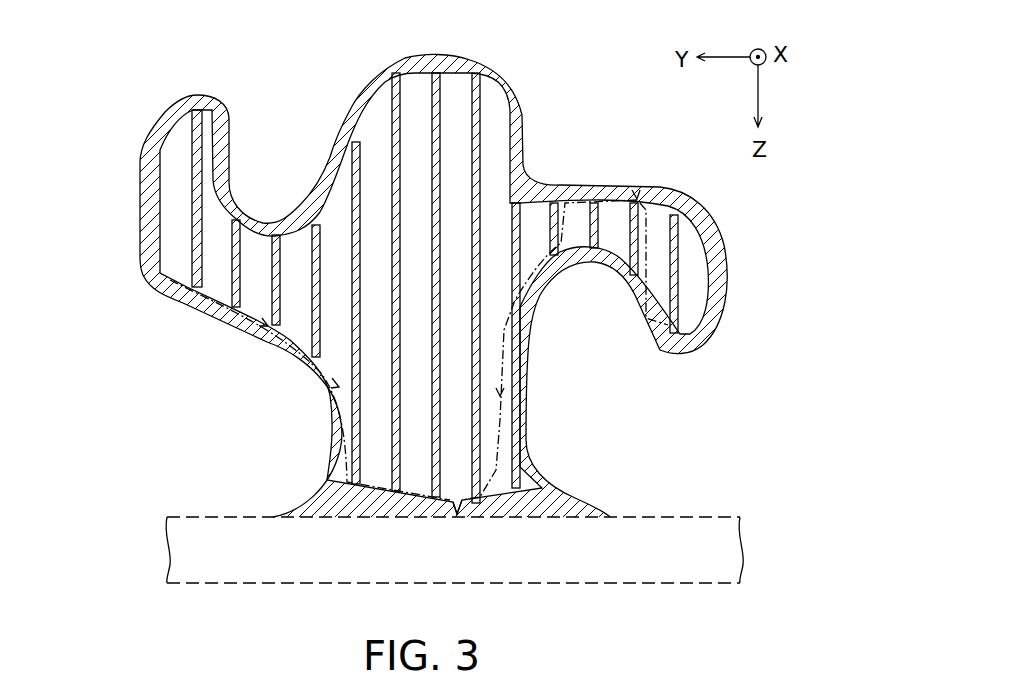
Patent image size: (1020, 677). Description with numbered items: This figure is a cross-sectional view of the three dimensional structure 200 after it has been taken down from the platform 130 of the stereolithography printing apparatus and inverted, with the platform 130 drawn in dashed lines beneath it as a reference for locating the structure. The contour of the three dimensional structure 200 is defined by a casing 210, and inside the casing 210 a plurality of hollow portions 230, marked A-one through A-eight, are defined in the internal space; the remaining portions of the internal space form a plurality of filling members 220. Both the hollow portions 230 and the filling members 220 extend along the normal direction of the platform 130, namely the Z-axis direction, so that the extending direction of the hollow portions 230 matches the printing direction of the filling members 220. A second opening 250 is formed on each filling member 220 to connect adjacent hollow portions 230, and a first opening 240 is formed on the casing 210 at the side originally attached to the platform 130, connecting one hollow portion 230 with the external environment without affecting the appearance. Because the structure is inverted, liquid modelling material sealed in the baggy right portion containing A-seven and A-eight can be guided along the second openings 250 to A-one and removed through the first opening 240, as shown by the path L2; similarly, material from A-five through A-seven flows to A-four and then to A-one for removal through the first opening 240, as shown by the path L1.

The three dimensional structure 200 is at (400, 336).
The casing 210 is at (178, 297).
The filling members 220 is at (193, 177).
The hollow portions 230 is at (177, 250).
The first opening 240 is at (458, 522).
The second opening 250 is at (266, 323).
The platform 130 is at (663, 568).
The path L1 is at (500, 423).
The path L2 is at (320, 413).